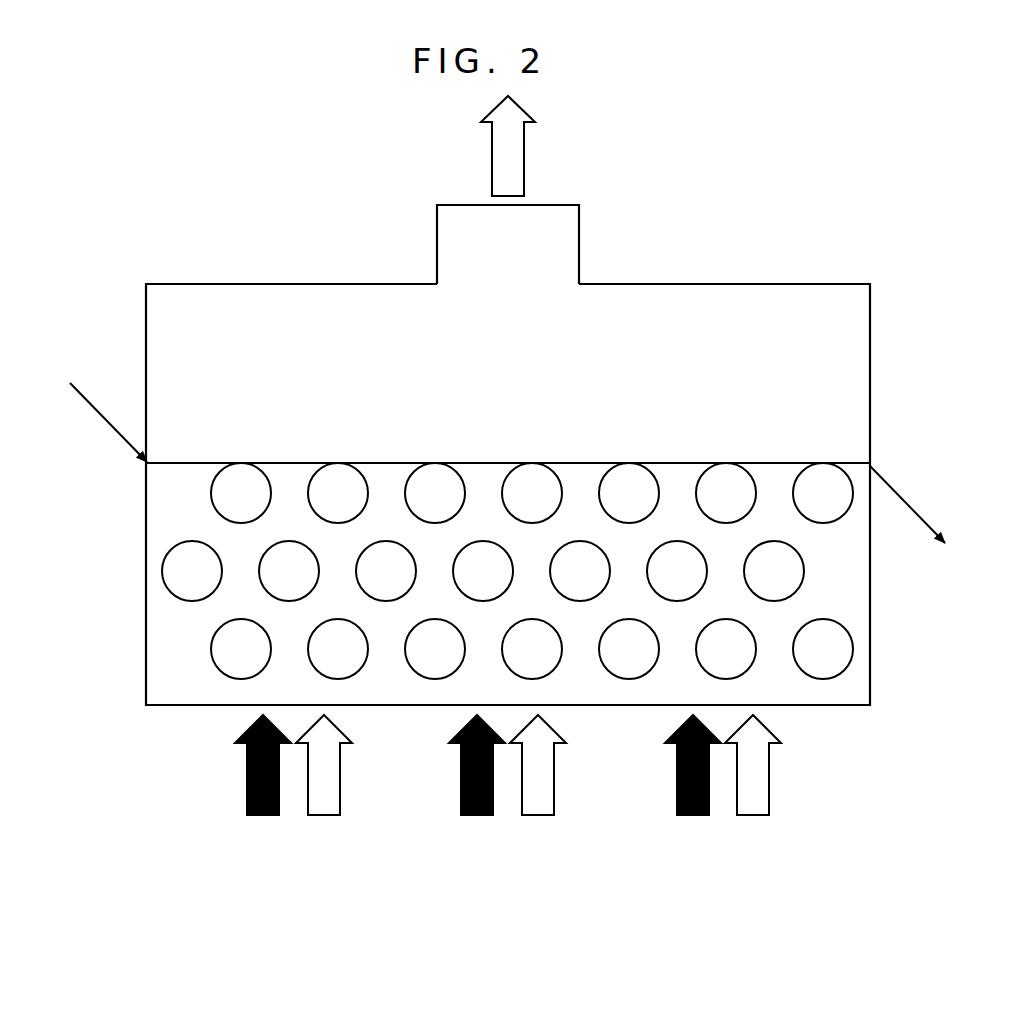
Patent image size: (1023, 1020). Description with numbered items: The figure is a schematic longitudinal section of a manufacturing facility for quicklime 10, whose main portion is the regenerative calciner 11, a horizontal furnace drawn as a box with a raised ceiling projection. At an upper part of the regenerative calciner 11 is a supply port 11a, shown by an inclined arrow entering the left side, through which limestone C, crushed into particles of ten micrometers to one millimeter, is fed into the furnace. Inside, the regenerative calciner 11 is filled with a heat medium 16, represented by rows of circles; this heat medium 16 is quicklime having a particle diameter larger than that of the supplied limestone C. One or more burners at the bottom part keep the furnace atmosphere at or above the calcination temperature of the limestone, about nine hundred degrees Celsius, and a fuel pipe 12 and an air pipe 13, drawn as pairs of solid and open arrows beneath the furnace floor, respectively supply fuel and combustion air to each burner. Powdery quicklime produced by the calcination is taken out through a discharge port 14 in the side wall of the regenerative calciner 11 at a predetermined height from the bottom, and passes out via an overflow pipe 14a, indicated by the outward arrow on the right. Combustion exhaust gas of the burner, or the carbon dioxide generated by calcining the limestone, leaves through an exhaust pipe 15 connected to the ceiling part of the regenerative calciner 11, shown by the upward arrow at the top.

The manufacturing facility for quicklime 10 is at (255, 250).
The regenerative calciner 11 is at (832, 286).
The supply port 11a is at (145, 465).
The fuel pipe 12 is at (247, 787).
The air pipe 13 is at (340, 797).
The discharge port 14 is at (870, 466).
The overflow pipe 14a is at (908, 503).
The exhaust pipe 15 is at (580, 235).
The heat medium 16 is at (530, 488).
The limestone C is at (289, 487).